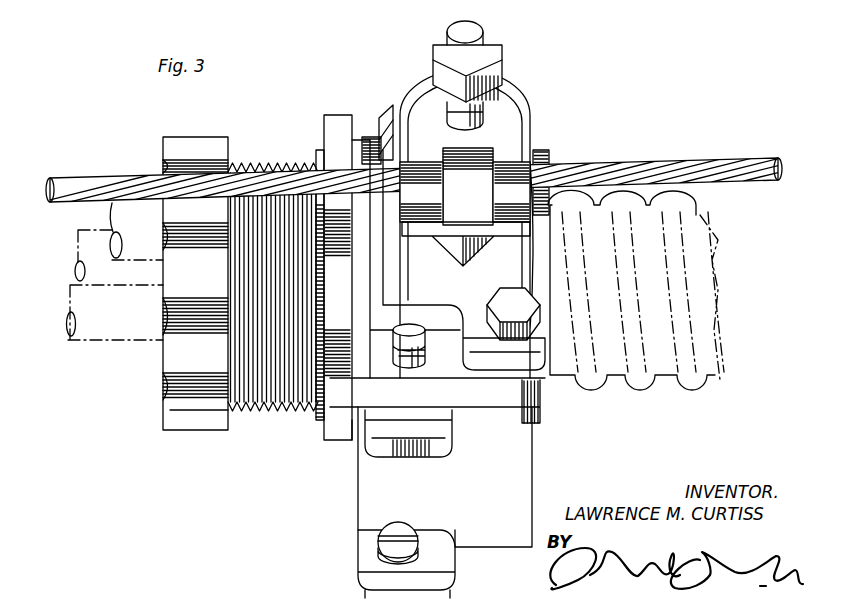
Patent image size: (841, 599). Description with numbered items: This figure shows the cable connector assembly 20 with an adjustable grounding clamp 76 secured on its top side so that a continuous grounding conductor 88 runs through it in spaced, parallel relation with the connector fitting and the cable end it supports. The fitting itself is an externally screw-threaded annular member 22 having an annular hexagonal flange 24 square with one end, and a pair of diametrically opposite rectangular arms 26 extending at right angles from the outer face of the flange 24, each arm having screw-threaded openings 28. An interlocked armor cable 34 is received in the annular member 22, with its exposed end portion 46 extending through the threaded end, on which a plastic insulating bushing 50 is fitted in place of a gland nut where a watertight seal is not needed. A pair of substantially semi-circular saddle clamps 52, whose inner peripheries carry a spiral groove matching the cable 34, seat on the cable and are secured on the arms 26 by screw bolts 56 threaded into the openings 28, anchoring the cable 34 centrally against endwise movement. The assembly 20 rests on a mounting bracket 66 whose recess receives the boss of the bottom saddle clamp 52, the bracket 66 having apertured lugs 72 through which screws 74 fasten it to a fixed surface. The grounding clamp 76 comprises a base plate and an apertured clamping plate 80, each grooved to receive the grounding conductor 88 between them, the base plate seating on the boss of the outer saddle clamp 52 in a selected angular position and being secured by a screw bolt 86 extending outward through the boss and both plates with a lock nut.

The cable connector assembly 20 is at (301, 128).
The externally screw-threaded annular member 22 is at (273, 413).
The annular hexagonal flange 24 is at (340, 120).
The arms 26 is at (540, 405).
The screw-threaded openings 28 is at (414, 352).
The interlocked armor cable 34 is at (652, 383).
The exposed end portion of the interlocked armor cable 46 is at (97, 332).
The plastic insulating bushing 50 is at (183, 143).
The saddle clamps 52 is at (548, 190).
The screw bolts 56 is at (517, 293).
The mounting bracket 66 is at (518, 478).
The apertured lugs 72 is at (437, 565).
The screws 74 is at (378, 543).
The grounding clamp 76 is at (522, 88).
The apertured clamping plate 80 is at (513, 108).
The screw bolt 86 is at (477, 35).
The continuous grounding conductor 88 is at (697, 163).